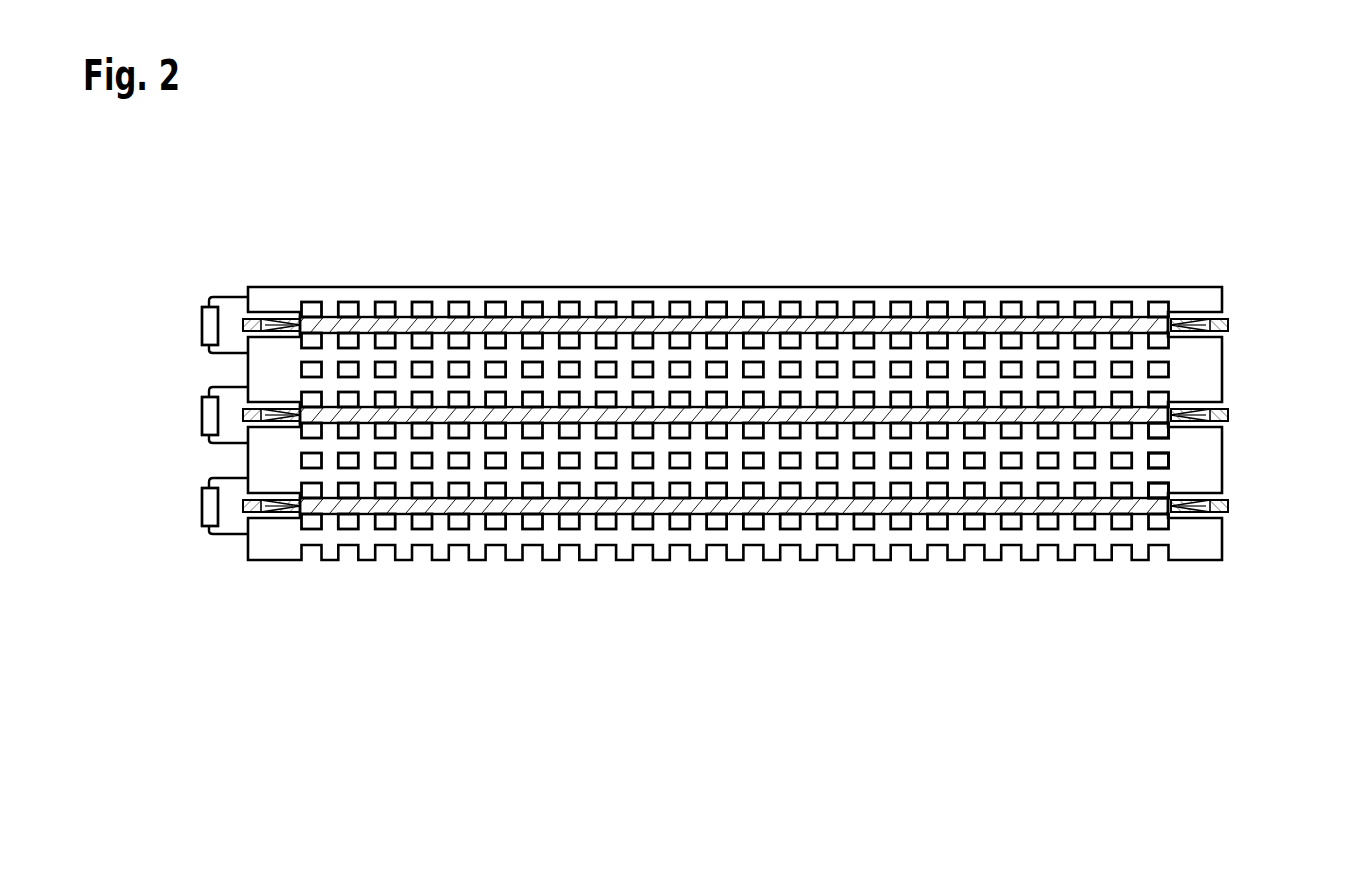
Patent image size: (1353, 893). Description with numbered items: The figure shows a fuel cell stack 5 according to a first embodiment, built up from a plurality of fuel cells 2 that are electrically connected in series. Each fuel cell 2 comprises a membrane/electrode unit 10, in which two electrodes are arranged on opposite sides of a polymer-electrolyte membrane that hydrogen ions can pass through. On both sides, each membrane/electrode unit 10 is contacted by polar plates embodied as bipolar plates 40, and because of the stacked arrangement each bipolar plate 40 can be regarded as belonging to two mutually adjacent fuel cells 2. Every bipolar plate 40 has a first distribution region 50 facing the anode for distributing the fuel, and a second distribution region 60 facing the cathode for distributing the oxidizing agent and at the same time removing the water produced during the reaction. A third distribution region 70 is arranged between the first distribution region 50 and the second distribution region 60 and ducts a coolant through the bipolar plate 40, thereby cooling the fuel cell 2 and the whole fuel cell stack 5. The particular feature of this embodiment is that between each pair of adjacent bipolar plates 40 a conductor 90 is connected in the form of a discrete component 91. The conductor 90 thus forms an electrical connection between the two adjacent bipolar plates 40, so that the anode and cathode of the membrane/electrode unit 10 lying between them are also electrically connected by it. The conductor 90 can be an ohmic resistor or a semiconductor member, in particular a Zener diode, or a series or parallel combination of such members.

The fuel cell 2 is at (1246, 322).
The fuel cell stack 5 is at (1049, 222).
The membrane/electrode unit 10 is at (566, 507).
The bipolar plate 40 is at (720, 443).
The first distribution region 50 is at (1160, 430).
The second distribution region 60 is at (1160, 490).
The third distribution region 70 is at (1160, 461).
The conductor 90 is at (202, 323).
The discrete component 91 is at (210, 416).